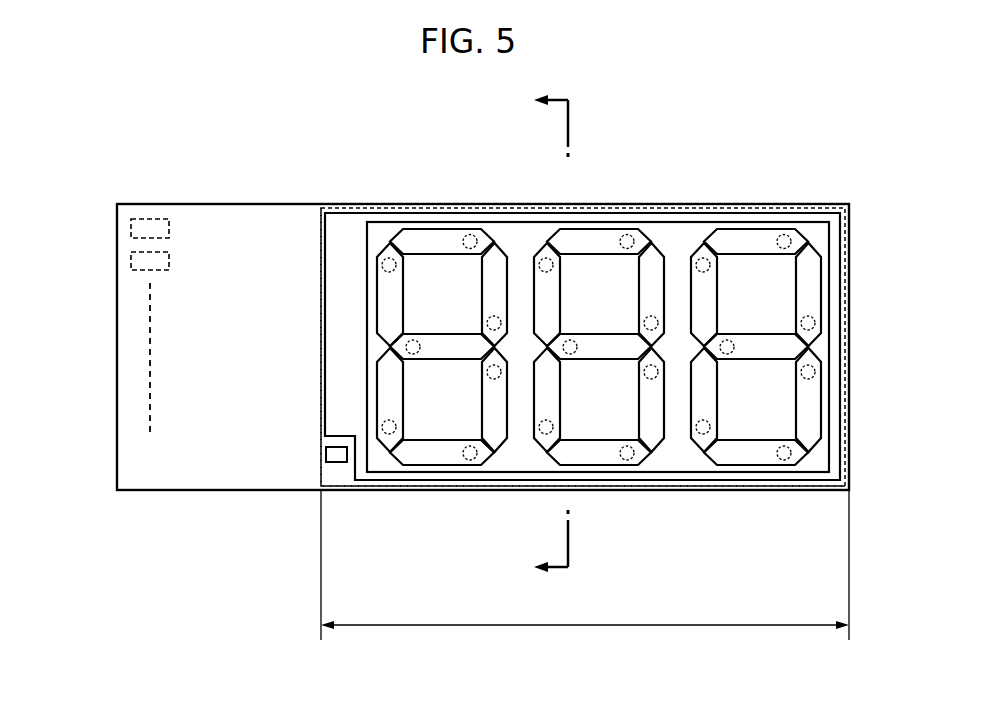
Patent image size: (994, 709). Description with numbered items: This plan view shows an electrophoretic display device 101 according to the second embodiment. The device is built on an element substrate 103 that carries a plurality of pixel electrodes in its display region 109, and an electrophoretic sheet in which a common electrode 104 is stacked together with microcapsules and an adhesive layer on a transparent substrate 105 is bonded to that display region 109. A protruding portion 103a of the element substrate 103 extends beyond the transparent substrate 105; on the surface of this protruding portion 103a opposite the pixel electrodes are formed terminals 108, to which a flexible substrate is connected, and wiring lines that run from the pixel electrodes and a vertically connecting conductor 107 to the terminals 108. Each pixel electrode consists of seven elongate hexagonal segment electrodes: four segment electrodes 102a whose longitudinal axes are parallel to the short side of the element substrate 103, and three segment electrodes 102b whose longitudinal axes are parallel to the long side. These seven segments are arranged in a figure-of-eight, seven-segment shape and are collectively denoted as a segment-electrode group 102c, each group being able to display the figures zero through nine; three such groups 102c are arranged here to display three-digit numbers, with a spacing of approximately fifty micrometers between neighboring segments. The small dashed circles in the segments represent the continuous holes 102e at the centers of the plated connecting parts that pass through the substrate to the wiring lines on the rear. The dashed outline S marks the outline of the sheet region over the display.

The electrophoretic display device 101 is at (789, 54).
The segment electrode 102a is at (381, 245).
The segment electrode 102b is at (438, 240).
The segment-electrode group 102c is at (468, 214).
The continuous hole 102e is at (822, 358).
The element substrate 103 is at (819, 492).
The protruding portion 103a is at (250, 480).
The common electrode 104 is at (835, 463).
The transparent substrate 105 is at (652, 486).
The vertically connecting conductor 107 is at (337, 463).
The terminals 108 is at (132, 232).
The display region 109 is at (585, 565).
The sealed space S is at (836, 240).